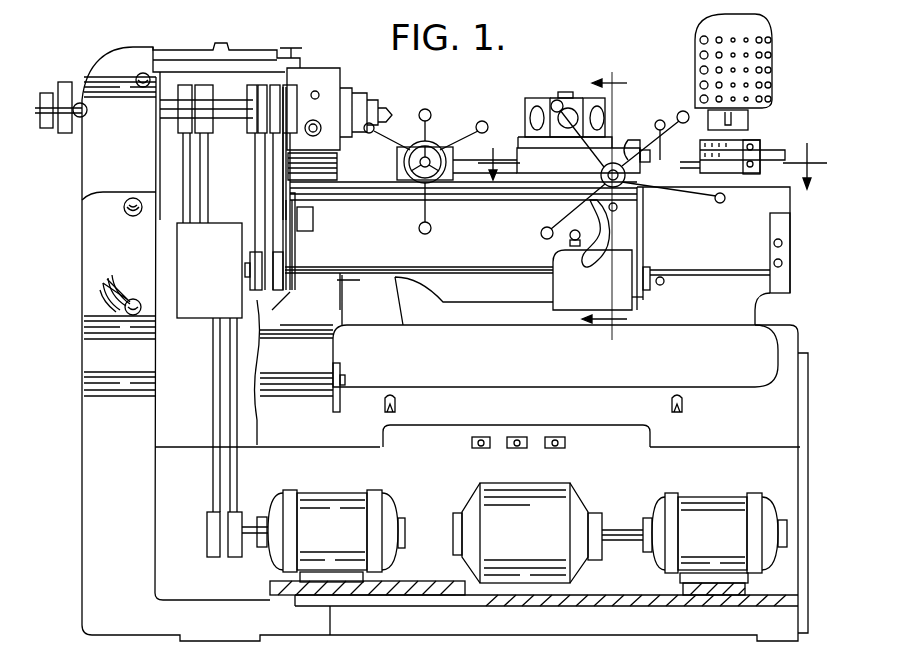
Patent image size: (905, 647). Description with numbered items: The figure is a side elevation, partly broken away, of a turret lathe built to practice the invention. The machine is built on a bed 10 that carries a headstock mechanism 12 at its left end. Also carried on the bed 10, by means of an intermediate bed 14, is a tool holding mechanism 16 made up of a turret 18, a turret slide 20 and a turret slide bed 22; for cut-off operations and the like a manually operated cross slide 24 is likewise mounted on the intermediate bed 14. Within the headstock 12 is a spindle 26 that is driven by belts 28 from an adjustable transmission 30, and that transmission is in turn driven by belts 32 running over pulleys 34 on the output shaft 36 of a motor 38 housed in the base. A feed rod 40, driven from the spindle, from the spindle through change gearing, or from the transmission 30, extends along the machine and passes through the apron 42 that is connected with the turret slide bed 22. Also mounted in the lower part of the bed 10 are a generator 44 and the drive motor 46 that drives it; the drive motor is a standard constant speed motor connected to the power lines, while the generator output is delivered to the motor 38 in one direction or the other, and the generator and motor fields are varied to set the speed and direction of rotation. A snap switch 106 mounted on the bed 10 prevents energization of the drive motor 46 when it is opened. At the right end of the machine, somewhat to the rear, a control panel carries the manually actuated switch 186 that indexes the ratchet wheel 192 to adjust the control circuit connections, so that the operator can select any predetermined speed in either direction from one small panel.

The bed 10 is at (84, 470).
The headstock mechanism 12 is at (190, 48).
The intermediate bed 14 is at (758, 232).
The tool holding mechanism 16 is at (644, 88).
The turret 18 is at (559, 108).
The turret slide 20 is at (627, 148).
The turret slide bed 22 is at (555, 175).
The cross slide 24 is at (443, 182).
The spindle 26 is at (167, 105).
The belts 28 is at (200, 175).
The adjustable transmission 30 is at (185, 248).
The belts 32 is at (232, 452).
The pulleys 34 is at (243, 512).
The output shaft 36 is at (254, 537).
The motor 38 is at (309, 490).
The feed rod 40 is at (465, 277).
The apron 42 is at (628, 310).
The generator 44 is at (540, 556).
The drive motor 46 is at (727, 541).
The snap switch 106 is at (343, 383).
The switch 186 is at (748, 125).
The ratchet wheel 192 is at (732, 72).